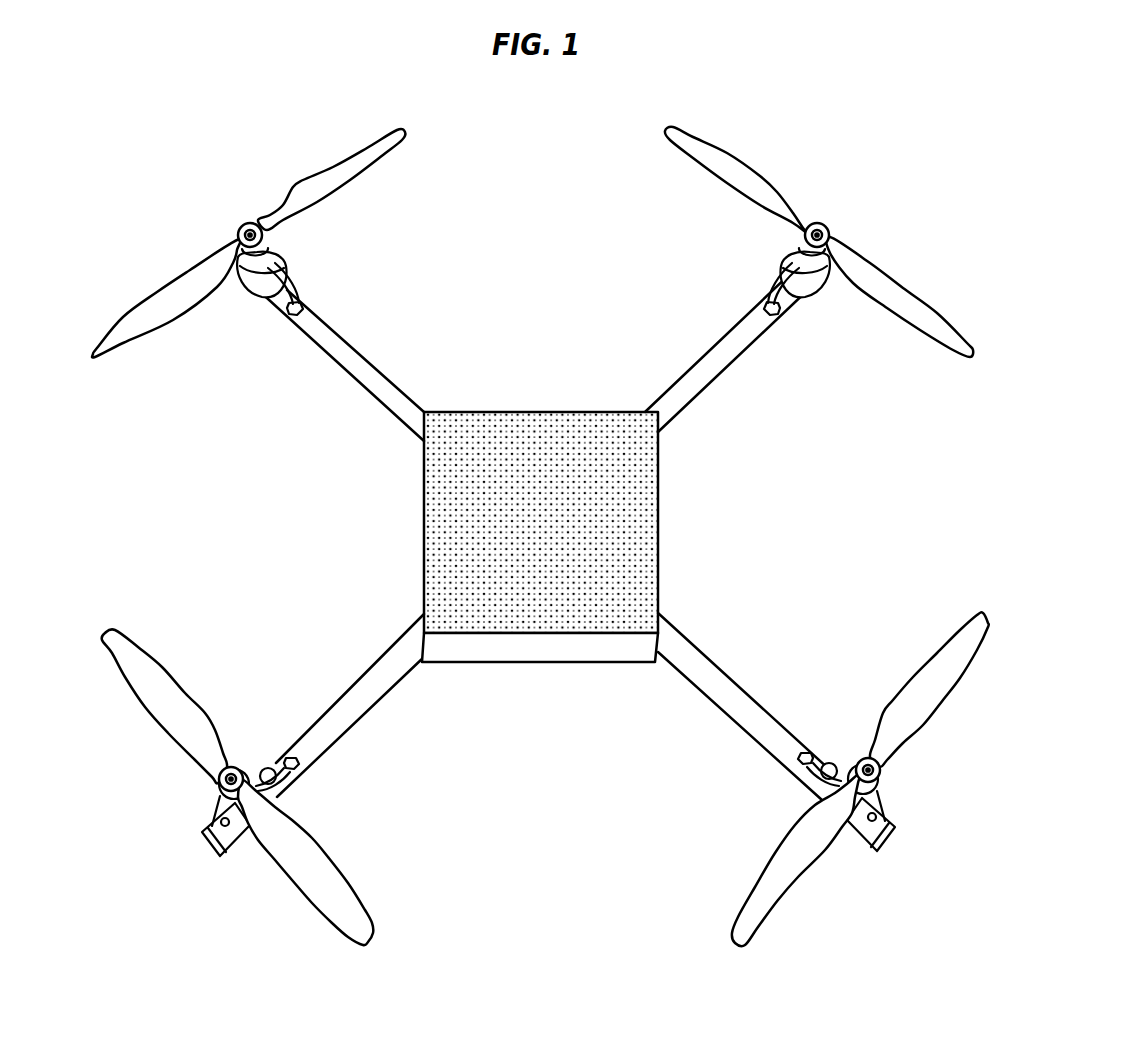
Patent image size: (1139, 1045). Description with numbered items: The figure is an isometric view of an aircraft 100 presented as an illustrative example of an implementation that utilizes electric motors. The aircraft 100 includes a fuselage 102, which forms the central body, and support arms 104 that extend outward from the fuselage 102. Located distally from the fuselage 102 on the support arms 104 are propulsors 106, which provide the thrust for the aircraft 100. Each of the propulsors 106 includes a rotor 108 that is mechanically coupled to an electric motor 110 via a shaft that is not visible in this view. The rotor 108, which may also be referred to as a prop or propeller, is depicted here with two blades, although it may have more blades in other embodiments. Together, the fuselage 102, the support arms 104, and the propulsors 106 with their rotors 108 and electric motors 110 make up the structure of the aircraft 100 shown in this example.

The aircraft 100 is at (1010, 109).
The fuselage 102 is at (660, 521).
The support arms 104 is at (345, 354).
The propulsors 106 is at (212, 172).
The rotor 108 is at (148, 303).
The electric motor 110 is at (272, 256).